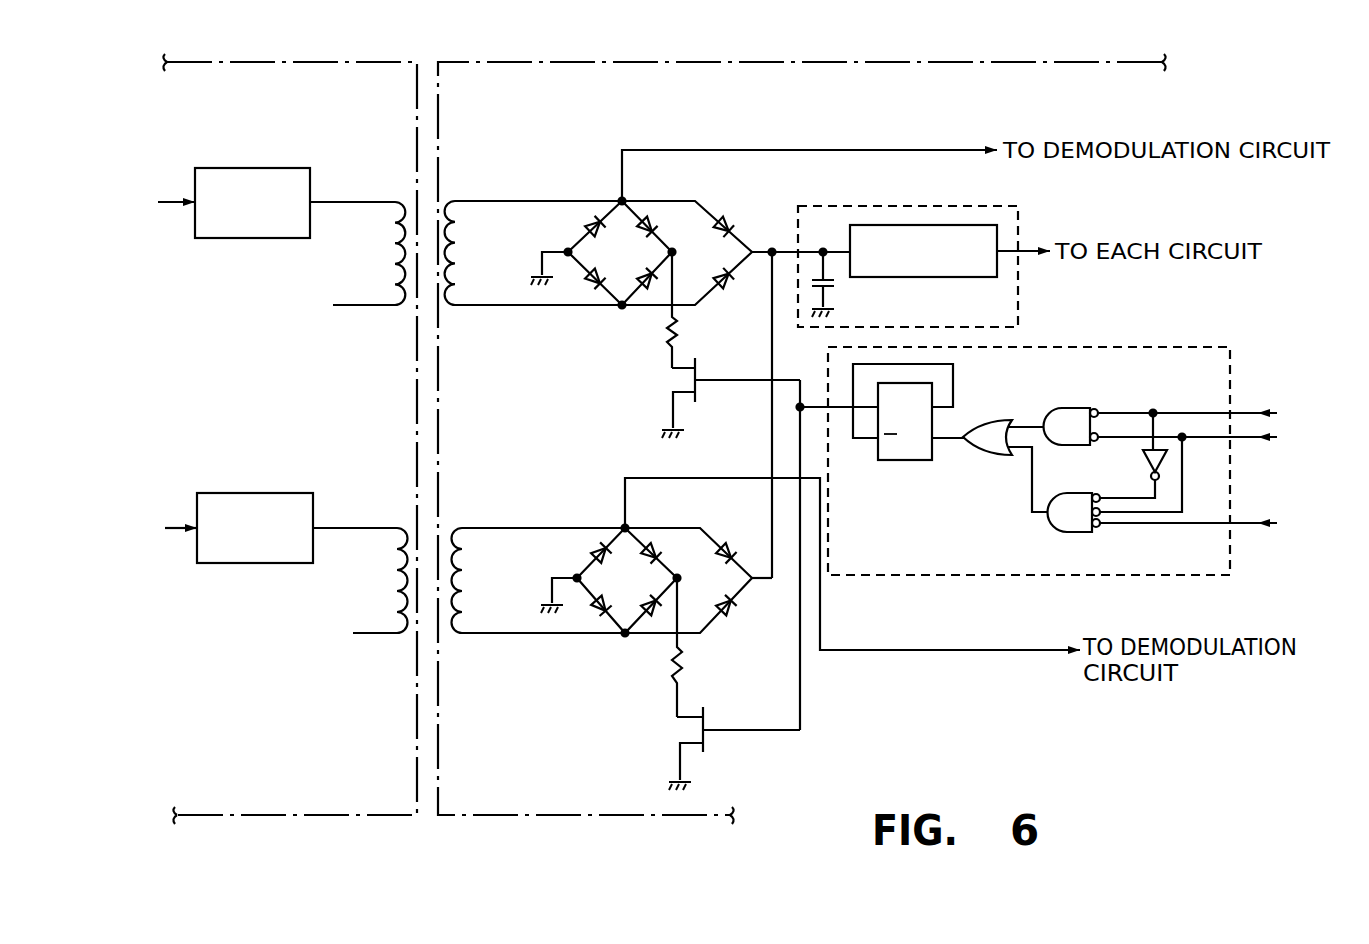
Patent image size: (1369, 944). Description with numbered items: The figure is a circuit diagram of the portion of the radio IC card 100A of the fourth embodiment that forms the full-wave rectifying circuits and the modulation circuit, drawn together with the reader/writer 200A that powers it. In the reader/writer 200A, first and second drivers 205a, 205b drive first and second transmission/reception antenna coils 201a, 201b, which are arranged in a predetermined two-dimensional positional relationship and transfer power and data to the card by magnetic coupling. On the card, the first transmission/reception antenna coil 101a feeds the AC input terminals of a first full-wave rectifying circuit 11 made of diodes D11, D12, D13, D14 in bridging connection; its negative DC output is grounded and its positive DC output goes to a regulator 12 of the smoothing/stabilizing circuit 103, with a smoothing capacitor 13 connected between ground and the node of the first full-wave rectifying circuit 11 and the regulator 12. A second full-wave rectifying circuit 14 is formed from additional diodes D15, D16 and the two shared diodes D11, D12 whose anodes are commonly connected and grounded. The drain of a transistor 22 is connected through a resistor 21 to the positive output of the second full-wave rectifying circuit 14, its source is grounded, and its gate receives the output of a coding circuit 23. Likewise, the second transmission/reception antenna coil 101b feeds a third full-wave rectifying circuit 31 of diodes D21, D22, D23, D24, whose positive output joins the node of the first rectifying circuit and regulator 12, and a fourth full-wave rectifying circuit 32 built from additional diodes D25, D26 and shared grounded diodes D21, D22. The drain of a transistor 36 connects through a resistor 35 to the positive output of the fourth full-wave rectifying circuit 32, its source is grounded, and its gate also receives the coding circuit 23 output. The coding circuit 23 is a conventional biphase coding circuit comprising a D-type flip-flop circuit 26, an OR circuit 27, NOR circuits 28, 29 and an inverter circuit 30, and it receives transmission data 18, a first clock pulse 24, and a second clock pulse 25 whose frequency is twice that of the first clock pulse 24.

The reader/writer 200A is at (325, 62).
The radio IC card 100A is at (932, 61).
The first driver 205a is at (247, 168).
The second driver 205b is at (239, 504).
The first transmission/reception antenna coil 201a is at (383, 228).
The second transmission/reception antenna coil 201b is at (360, 560).
The first transmission/reception antenna coil 101a is at (456, 220).
The second transmission/reception antenna coil 101b is at (463, 540).
The second full-wave rectifying circuit 14 is at (613, 228).
The first full-wave rectifying circuit 11 is at (665, 210).
The diode D11 is at (580, 234).
The diode D12 is at (584, 287).
The diode D13 is at (726, 222).
The diode D14 is at (732, 300).
The additional diode D15 is at (674, 228).
The additional diode D16 is at (651, 301).
The resistor 21 is at (680, 345).
The transistor (FET) 22 is at (682, 387).
The smoothing/stabilizing circuit 103 is at (928, 200).
The regulator 12 is at (962, 278).
The smoothing capacitor 13 is at (836, 283).
The coding circuit 23 is at (948, 578).
The D-type flip-flop circuit 26 is at (900, 463).
The OR circuit 27 is at (980, 420).
The NOR circuit 28 is at (1063, 408).
The NOR circuit 29 is at (1055, 531).
The inverter circuit 30 is at (1143, 460).
The first clock pulse 24 is at (1233, 413).
The second clock pulse 25 is at (1250, 440).
The transmission data 18 is at (1255, 526).
The third full-wave rectifying circuit 31 is at (675, 532).
The fourth full-wave rectifying circuit 32 is at (626, 543).
The diode D21 is at (595, 559).
The diode D22 is at (590, 610).
The diode D23 is at (727, 548).
The diode D24 is at (736, 612).
The additional diode D25 is at (677, 550).
The additional diode D26 is at (655, 628).
The resistor 35 is at (690, 657).
The transistor (FET) 36 is at (676, 725).